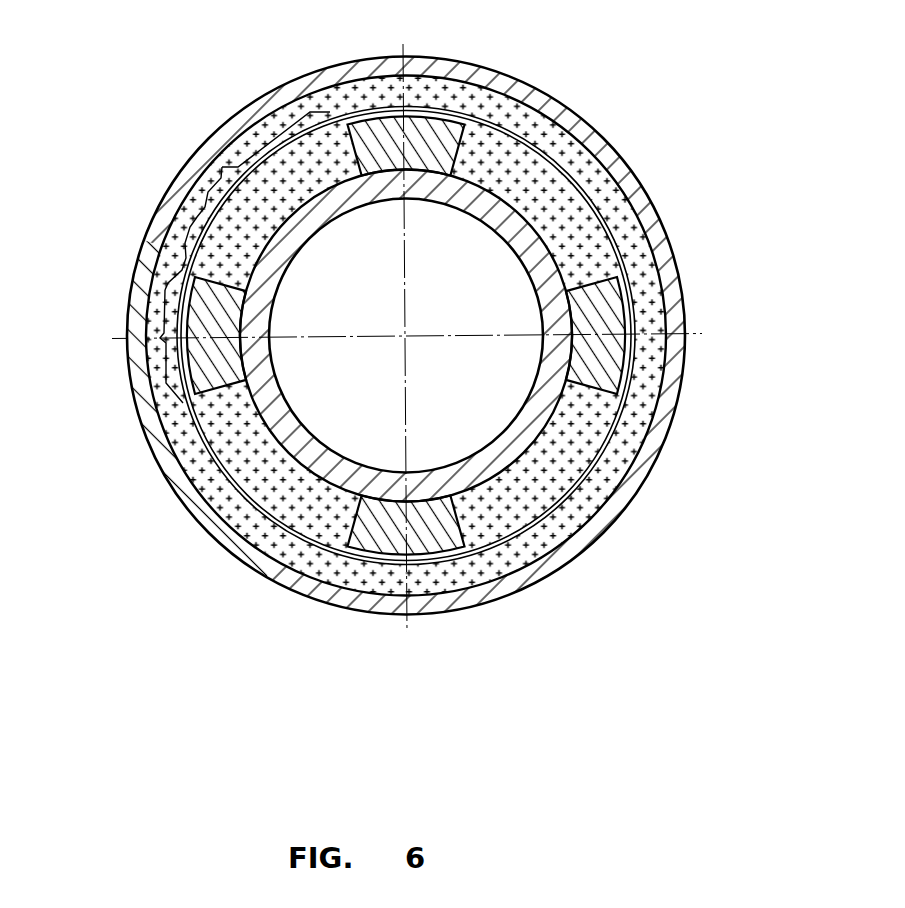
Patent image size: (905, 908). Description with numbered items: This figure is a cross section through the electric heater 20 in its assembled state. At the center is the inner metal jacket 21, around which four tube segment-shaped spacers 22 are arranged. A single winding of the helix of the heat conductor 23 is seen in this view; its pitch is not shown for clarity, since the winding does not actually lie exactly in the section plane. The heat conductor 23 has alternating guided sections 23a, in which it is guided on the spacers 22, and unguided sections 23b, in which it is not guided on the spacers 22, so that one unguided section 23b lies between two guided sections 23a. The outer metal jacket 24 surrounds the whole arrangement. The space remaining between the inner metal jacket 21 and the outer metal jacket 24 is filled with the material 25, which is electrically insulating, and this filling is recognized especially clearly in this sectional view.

The electric heater 20 is at (535, 677).
The inner metal jacket 21 is at (515, 445).
The tube segment-shaped spacers 22 is at (592, 353).
The heat conductor 23 is at (194, 494).
The guided sections 23a is at (165, 339).
The unguided sections 23b is at (223, 167).
The outer metal jacket 24 is at (313, 592).
The material 25 is at (563, 217).